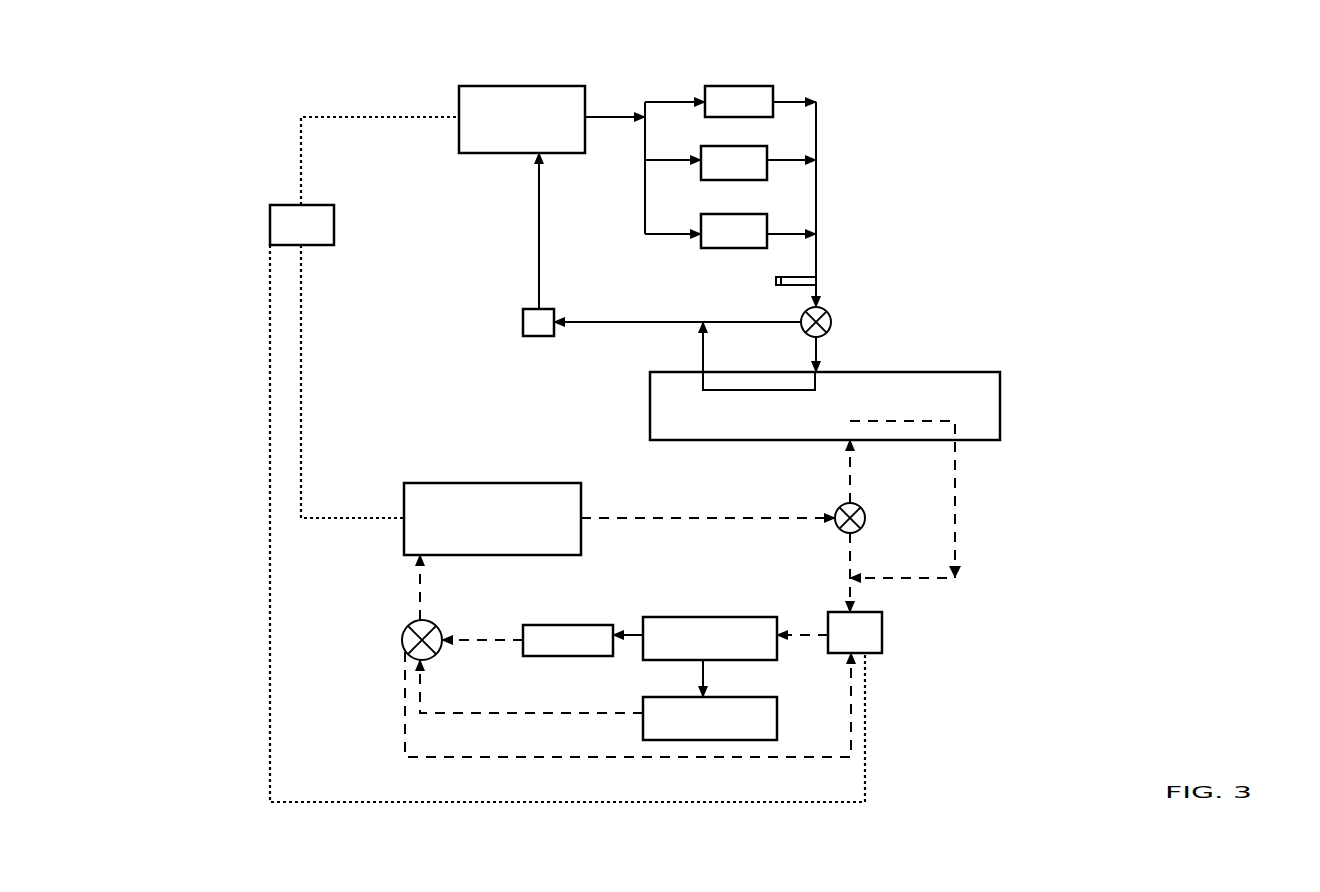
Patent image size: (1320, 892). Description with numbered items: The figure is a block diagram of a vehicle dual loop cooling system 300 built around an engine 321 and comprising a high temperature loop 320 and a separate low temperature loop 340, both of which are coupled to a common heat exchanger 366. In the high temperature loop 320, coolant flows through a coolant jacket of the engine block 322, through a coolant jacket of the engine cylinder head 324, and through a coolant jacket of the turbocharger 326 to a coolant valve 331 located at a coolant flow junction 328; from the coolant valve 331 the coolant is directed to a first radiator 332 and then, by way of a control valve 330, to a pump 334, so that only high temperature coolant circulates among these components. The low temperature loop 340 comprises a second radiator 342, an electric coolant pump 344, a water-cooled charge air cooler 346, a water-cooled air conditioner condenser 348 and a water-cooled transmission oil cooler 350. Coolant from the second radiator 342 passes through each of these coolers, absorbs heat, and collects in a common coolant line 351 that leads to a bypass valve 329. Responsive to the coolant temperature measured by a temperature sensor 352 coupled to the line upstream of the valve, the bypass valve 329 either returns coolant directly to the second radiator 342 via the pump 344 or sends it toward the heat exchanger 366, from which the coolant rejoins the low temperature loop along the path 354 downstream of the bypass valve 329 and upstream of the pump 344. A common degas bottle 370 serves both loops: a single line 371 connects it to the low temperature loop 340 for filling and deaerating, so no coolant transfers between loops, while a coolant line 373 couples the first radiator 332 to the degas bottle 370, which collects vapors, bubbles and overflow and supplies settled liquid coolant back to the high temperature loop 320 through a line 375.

The vehicle dual loop cooling system 300 is at (1198, 94).
The high temperature loop 320 is at (617, 496).
The engine 321 is at (710, 601).
The engine block 322 is at (710, 638).
The engine cylinder head 324 is at (710, 718).
The turbocharger 326 is at (568, 640).
The coolant flow junction 328 is at (433, 609).
The bypass valve 329 is at (832, 314).
The control valve 330 is at (836, 510).
The coolant valve 331 is at (410, 628).
The first radiator 332 is at (492, 519).
The pump 334 is at (855, 632).
The low temperature loop 340 is at (868, 112).
The second radiator 342 is at (522, 119).
The electric coolant pump 344 is at (523, 320).
The water-cooled charge air cooler 346 is at (734, 163).
The water-cooled air conditioner condenser 348 is at (734, 231).
The water-cooled transmission oil cooler 350 is at (739, 101).
The coolant line 351 is at (818, 250).
The temperature sensor 352 is at (780, 277).
The feedback signal 354 is at (700, 362).
The heat exchanger 366 is at (825, 406).
The common degas bottle 370 is at (302, 225).
The line 371 is at (310, 112).
The coolant line 373 is at (303, 296).
The line 375 is at (271, 578).